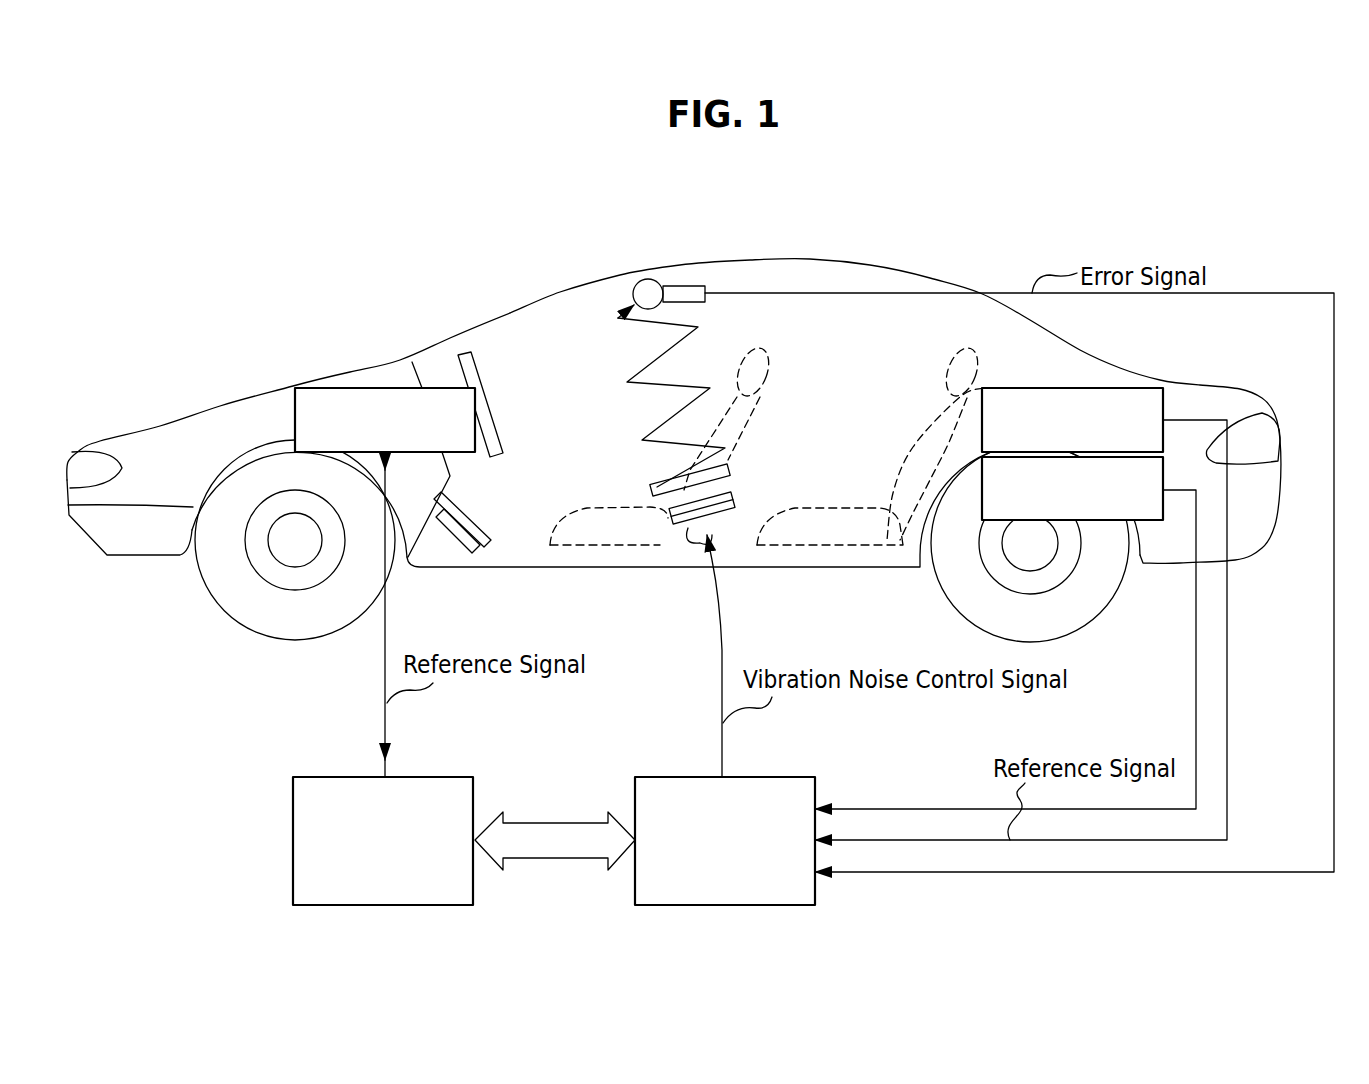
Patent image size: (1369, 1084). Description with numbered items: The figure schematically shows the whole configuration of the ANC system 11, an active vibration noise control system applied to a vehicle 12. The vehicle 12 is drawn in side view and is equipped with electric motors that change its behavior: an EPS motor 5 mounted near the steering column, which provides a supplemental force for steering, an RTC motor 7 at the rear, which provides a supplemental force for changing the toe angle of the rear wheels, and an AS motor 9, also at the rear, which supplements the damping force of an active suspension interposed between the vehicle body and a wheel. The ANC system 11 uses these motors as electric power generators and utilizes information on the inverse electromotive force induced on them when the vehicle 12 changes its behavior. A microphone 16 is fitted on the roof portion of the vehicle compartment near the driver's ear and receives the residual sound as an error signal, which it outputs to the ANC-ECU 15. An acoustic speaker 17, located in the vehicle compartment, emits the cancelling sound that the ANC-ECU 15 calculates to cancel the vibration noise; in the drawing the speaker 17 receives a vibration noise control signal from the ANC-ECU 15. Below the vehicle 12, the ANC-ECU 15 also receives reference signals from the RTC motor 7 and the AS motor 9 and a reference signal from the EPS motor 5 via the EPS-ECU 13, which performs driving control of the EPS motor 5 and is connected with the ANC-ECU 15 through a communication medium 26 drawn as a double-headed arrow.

The ANC system 11 is at (962, 233).
The vehicle 12 is at (212, 403).
The EPS motor 5 is at (367, 386).
The microphone 16 is at (680, 285).
The acoustic speaker 17 is at (653, 483).
The RTC motor 7 is at (1127, 388).
The AS motor 9 is at (1122, 521).
The EPS-ECU 13 is at (437, 776).
The ANC-ECU 15 is at (780, 776).
The communication medium 26 is at (555, 840).